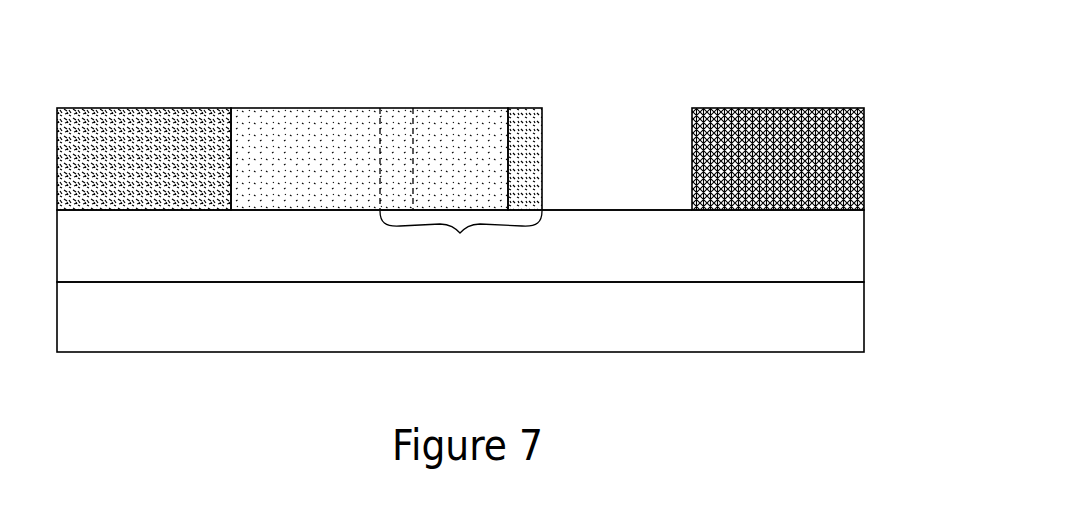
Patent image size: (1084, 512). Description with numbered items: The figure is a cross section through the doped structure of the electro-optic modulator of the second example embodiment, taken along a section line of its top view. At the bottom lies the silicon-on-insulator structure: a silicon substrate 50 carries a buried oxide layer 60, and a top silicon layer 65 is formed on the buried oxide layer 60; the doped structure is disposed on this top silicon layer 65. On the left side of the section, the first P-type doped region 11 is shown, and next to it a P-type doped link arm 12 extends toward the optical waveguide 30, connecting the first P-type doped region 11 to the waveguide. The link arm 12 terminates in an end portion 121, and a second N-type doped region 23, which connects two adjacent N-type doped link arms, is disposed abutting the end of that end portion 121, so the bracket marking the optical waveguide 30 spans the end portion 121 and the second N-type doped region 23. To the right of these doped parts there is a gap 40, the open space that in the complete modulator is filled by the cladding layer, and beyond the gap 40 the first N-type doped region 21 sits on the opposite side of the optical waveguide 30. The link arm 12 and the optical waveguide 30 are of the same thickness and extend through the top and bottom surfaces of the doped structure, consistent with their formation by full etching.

The first P-type doped region 11 is at (130, 127).
The P-type doped link arm 12 is at (292, 127).
The end portion of P-type doped link arm 121 is at (450, 127).
The second N-type doped region 23 is at (517, 130).
The optical waveguide 30 is at (461, 188).
The gap 40 is at (642, 160).
The first N-type doped region 21 is at (792, 113).
The top silicon layer 65 is at (845, 148).
The buried oxide layer 60 is at (837, 258).
The silicon substrate 50 is at (842, 327).